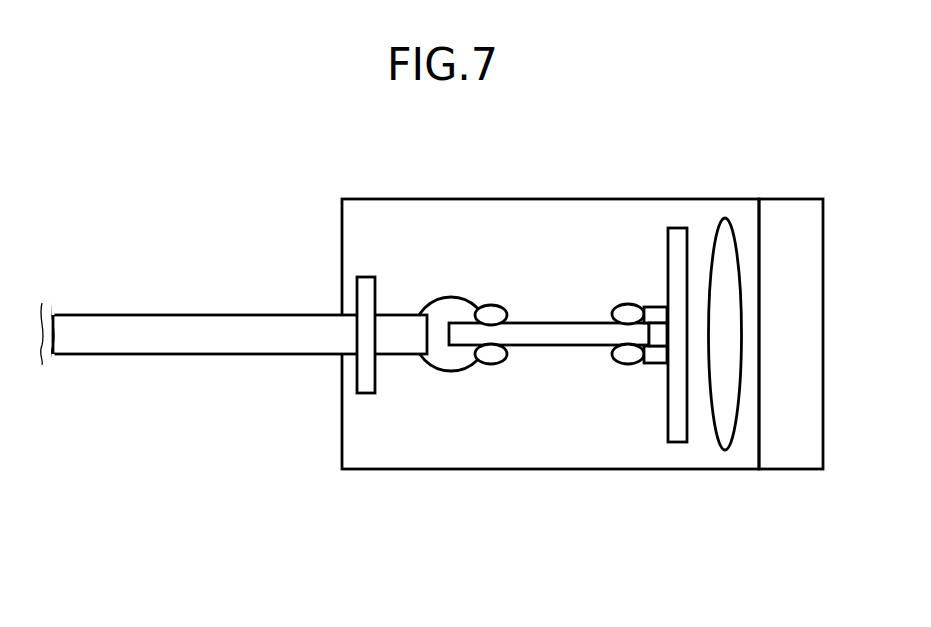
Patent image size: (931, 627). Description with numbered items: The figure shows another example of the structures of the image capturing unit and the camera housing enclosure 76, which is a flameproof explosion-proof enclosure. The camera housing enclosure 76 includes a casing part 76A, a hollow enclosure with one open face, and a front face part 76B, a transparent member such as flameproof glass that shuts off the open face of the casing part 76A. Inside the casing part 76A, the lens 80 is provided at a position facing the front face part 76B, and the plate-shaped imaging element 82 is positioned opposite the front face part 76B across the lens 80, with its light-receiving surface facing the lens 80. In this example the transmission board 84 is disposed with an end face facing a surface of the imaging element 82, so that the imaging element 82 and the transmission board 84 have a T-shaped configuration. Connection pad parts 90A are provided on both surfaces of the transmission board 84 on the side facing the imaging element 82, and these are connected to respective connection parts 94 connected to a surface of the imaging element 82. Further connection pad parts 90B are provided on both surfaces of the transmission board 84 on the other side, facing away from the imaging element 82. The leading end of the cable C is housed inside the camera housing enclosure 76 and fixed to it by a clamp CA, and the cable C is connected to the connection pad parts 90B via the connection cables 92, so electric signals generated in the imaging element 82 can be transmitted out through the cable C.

The cable C is at (197, 315).
The clamp CA is at (364, 277).
The camera housing enclosure 76 is at (587, 385).
The casing part 76A is at (727, 470).
The front face part 76B is at (791, 363).
The lens 80 is at (725, 218).
The imaging element 82 is at (676, 227).
The transmission board 84 is at (556, 345).
The connection pad parts 90A is at (628, 304).
The connection pad parts 90B is at (491, 305).
The connection cables 92 is at (447, 297).
The connection parts 94 is at (661, 306).